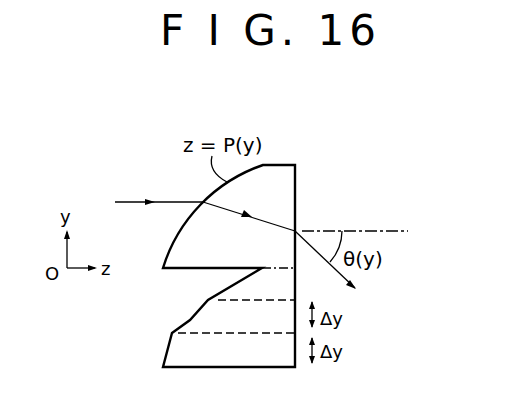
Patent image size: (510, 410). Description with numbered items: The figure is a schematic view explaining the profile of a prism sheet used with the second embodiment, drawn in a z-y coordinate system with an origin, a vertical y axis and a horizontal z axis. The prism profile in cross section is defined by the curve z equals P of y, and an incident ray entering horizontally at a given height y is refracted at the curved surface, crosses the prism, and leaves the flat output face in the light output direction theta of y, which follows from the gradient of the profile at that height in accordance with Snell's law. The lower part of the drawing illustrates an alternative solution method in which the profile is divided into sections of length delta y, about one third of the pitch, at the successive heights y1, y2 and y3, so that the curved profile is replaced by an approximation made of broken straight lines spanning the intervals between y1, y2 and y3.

The height y1 is at (163, 348).
The height y2 is at (190, 315).
The height y3 is at (218, 283).